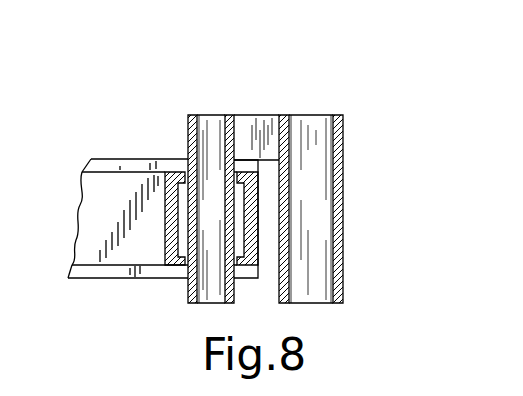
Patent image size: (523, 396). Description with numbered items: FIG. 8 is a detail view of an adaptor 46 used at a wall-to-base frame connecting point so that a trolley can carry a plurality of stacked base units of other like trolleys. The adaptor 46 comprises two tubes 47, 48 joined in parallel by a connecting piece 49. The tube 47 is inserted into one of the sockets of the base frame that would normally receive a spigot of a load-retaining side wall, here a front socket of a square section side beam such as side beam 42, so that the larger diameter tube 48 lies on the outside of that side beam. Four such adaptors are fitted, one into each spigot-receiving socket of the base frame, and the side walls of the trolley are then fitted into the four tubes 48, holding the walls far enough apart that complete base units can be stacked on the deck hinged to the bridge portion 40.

The bridge portion 40 is at (118, 158).
The side beam 42 is at (166, 232).
The adaptor 46 is at (307, 112).
The tube 47 is at (188, 140).
The larger diameter tube 48 is at (341, 146).
The connecting piece 49 is at (253, 140).